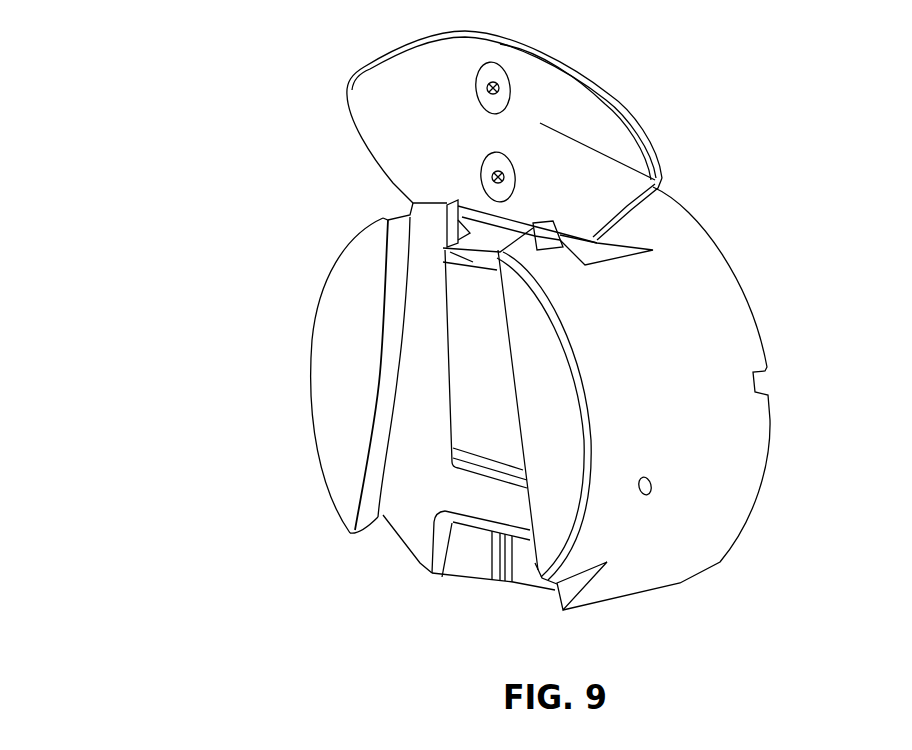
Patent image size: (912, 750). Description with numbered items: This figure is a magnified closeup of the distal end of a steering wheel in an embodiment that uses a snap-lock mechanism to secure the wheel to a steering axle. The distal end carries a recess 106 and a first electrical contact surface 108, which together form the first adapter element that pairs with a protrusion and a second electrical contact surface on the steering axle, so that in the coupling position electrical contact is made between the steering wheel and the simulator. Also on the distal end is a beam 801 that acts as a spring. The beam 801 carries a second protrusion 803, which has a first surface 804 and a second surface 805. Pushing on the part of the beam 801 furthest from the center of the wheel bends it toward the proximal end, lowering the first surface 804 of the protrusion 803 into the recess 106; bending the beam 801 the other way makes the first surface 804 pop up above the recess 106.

The beam 801 is at (652, 177).
The second surface 805 is at (475, 251).
The second protrusion 803 is at (467, 291).
The first surface 804 is at (475, 372).
The recess 106 is at (422, 457).
The first electrical contact surface 108 is at (495, 545).